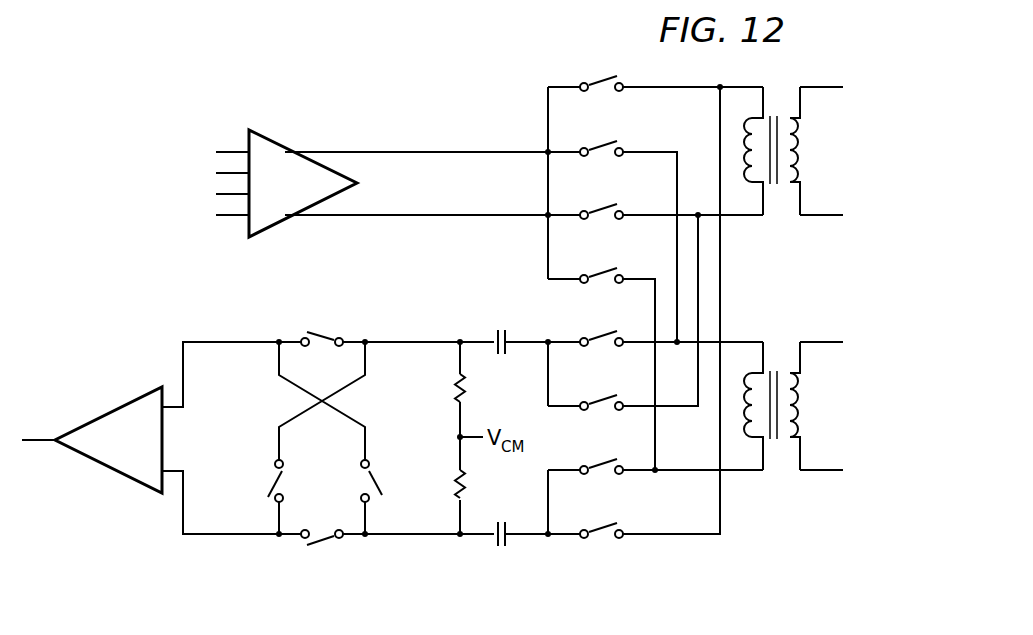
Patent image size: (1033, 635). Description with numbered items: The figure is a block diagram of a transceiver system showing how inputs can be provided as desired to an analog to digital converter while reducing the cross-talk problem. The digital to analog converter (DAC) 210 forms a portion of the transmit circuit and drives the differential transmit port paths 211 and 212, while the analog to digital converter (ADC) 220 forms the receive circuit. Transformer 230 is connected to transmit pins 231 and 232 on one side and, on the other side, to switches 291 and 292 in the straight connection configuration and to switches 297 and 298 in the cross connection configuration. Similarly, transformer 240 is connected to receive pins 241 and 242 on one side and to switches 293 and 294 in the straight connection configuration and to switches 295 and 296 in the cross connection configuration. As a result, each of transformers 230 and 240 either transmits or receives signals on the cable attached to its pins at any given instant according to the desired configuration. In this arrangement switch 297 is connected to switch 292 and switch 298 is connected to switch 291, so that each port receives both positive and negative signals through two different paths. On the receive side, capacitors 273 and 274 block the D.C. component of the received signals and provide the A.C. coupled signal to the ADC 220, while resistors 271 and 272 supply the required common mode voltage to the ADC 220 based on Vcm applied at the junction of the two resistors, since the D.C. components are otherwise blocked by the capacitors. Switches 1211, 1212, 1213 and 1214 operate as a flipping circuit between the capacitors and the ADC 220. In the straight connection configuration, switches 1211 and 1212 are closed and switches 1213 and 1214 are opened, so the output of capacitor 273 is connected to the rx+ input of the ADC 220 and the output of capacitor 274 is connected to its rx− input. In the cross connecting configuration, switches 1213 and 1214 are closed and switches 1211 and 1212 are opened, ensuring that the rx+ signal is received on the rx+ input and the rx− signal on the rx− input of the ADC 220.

The digital to analog converter 210 is at (265, 133).
The transmit port path 211 is at (398, 151).
The transmit port path 212 is at (398, 216).
The analog to digital converter 220 is at (105, 468).
The transformer 230 is at (796, 141).
The transmit pin 231 is at (822, 86).
The transmit pin 232 is at (822, 216).
The transformer 240 is at (794, 413).
The receive pin 241 is at (822, 341).
The receive pin 242 is at (822, 471).
The resistor 271 is at (467, 391).
The resistor 272 is at (467, 489).
The capacitor 273 is at (500, 328).
The capacitor 274 is at (500, 548).
The switch 291 is at (607, 77).
The switch 292 is at (607, 205).
The switch 293 is at (607, 332).
The switch 294 is at (607, 460).
The switch 295 is at (607, 142).
The switch 296 is at (607, 269).
The switch 297 is at (607, 396).
The switch 298 is at (607, 524).
The switch 1211 is at (323, 333).
The switch 1212 is at (323, 543).
The switch 1213 is at (380, 486).
The switch 1214 is at (270, 482).